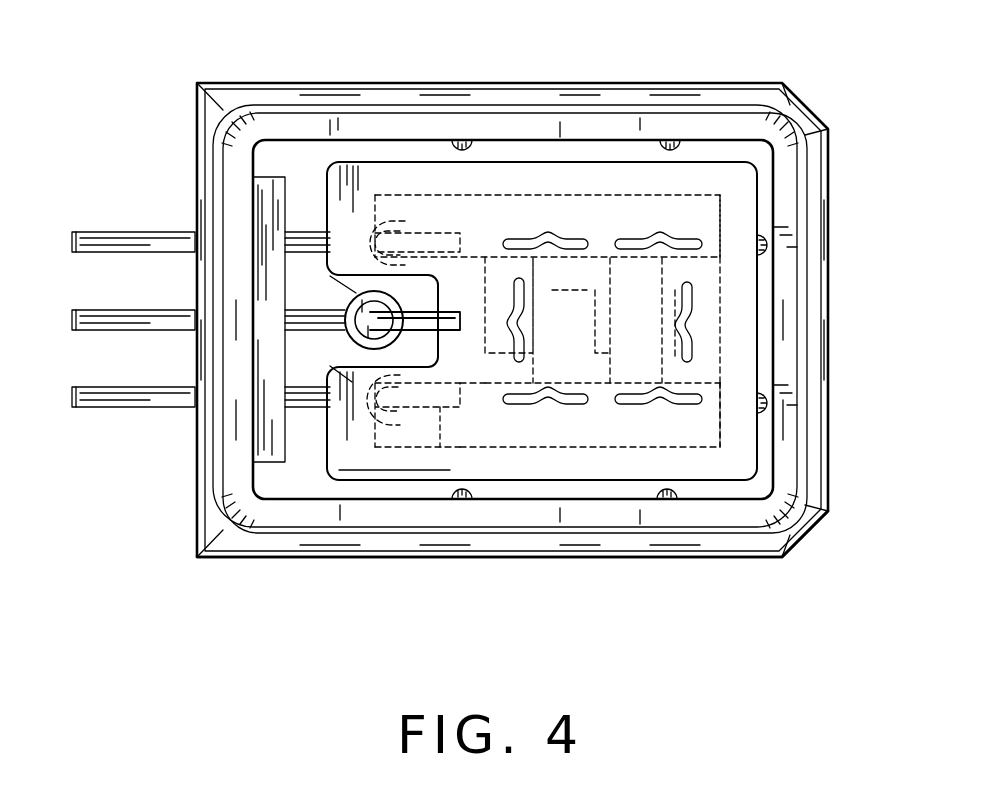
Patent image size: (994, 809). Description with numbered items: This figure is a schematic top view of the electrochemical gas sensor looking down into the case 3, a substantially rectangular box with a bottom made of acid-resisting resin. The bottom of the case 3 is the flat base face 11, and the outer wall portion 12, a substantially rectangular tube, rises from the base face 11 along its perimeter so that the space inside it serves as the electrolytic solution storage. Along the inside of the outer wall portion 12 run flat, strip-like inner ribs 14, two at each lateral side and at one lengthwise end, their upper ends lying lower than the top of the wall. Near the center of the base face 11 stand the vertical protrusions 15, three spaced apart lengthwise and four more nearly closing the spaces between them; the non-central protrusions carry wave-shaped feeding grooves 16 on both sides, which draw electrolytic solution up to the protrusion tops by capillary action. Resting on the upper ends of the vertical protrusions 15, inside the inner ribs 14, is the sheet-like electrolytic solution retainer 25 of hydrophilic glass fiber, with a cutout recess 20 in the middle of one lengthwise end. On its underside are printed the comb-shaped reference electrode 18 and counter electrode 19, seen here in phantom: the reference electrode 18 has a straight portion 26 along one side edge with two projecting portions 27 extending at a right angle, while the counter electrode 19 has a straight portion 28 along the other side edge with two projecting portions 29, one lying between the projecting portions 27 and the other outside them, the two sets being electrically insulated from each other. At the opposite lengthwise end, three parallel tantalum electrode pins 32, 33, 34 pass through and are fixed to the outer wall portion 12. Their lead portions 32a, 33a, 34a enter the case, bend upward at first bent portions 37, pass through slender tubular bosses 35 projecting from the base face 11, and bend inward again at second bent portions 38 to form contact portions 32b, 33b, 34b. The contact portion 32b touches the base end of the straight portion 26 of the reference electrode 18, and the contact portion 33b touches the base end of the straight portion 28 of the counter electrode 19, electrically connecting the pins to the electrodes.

The case 3 is at (488, 82).
The base face 11 is at (800, 108).
The outer wall portion 12 is at (760, 557).
The inner rib 14 is at (458, 140).
The vertical protrusion 15 is at (633, 239).
The feeding groove 16 is at (524, 239).
The reference electrode 18 is at (346, 225).
The counter electrode 19 is at (427, 407).
The cutout recess 20 is at (407, 355).
The electrolytic solution retainer 25 is at (760, 174).
The straight portion 26 is at (645, 195).
The projecting portion 27 is at (487, 353).
The straight portion 28 is at (512, 360).
The projecting portion 29 is at (578, 290).
The electrode pin 32 is at (112, 232).
The lead portion 32a is at (82, 253).
The contact portion 32b is at (403, 232).
The electrode pin 33 is at (112, 387).
The lead portion 33a is at (93, 408).
The contact portion 33b is at (383, 447).
The electrode pin 34 is at (112, 310).
The lead portion 34a is at (82, 331).
The contact portion 34b is at (428, 306).
The boss 35 is at (286, 302).
The first bent portion 37 is at (347, 406).
The second bent portion 38 is at (372, 398).